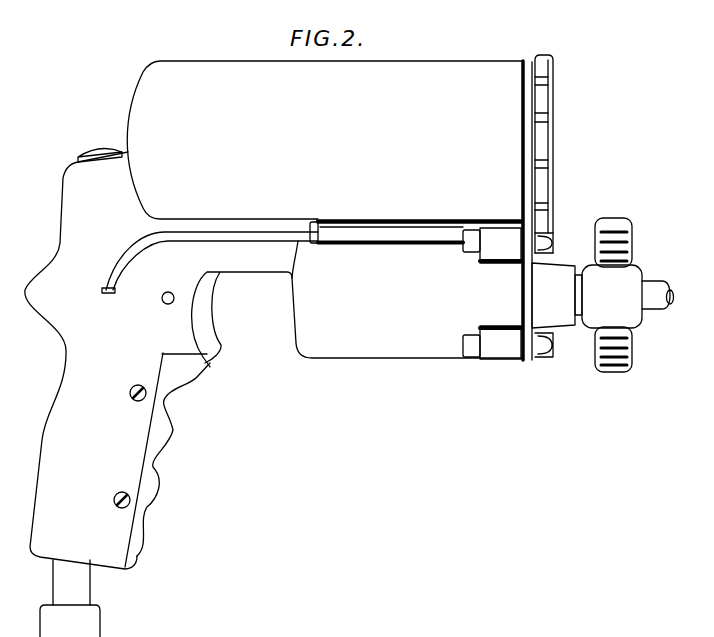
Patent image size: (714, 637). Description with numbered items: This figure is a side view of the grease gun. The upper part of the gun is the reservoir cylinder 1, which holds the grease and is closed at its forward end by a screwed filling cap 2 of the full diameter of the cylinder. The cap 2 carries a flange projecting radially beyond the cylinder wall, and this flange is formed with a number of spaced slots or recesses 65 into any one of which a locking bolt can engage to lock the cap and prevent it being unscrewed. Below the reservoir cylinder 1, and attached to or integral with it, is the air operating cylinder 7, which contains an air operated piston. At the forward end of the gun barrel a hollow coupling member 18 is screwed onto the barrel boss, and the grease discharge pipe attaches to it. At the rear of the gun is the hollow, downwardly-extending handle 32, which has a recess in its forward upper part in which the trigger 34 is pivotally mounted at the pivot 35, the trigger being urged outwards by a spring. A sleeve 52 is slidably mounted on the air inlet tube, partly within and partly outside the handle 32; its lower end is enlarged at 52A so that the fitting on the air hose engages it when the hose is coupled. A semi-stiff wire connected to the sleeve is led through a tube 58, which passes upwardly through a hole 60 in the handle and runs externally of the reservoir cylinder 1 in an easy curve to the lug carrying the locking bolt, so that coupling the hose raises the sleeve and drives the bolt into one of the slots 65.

The reservoir cylinder 1 is at (365, 70).
The filling cap 2 is at (553, 107).
The slots 65 is at (549, 80).
The air operating cylinder 7 is at (358, 350).
The tube 58 is at (213, 237).
The hole 60 is at (107, 294).
The pivot 35 is at (167, 304).
The trigger 34 is at (200, 318).
The handle 32 is at (60, 400).
The sleeve 52 is at (78, 590).
The enlarged lower end of sleeve 52A is at (82, 622).
The hollow coupling member 18 is at (622, 281).